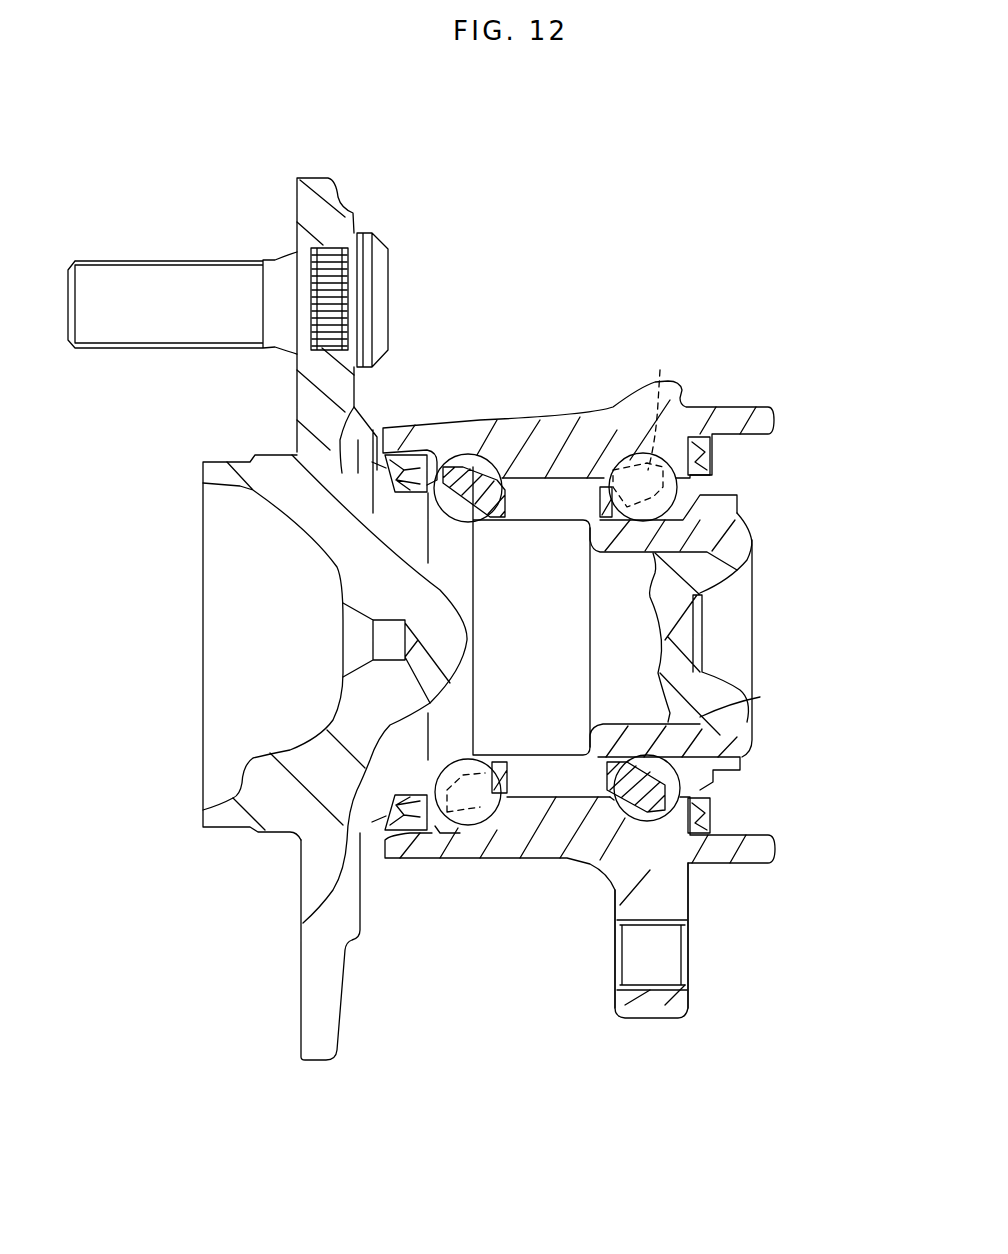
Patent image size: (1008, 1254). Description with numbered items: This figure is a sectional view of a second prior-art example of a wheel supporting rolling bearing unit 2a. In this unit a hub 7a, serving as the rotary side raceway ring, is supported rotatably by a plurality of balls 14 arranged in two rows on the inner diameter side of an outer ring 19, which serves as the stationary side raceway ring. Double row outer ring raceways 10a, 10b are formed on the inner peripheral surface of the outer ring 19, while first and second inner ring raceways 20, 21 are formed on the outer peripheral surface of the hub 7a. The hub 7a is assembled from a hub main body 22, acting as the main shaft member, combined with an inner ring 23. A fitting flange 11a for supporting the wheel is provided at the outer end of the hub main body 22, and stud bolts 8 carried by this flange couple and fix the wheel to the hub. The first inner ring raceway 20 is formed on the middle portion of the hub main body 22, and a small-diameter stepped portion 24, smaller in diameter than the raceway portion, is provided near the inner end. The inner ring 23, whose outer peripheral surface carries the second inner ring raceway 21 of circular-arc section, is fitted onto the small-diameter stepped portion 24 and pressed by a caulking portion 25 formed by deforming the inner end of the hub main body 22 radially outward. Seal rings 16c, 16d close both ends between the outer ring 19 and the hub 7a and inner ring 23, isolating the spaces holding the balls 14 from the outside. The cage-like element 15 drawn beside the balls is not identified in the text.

The wheel supporting rolling bearing unit 2a is at (729, 393).
The hub 7a is at (327, 442).
The stud bolt 8 is at (183, 285).
The outer ring raceway 10a is at (468, 817).
The outer ring raceway 10b is at (663, 827).
The fitting flange 11a is at (323, 1003).
The ball 14 is at (610, 463).
The cage 15 is at (460, 467).
The seal ring 16c is at (388, 826).
The seal ring 16d is at (717, 815).
The outer ring 19 is at (603, 877).
The first inner ring raceway 20 is at (448, 500).
The second inner ring raceway 21 is at (733, 510).
The hub main body 22 is at (447, 713).
The inner ring 23 is at (720, 747).
The small-diameter stepped portion 24 is at (705, 723).
The caulking portion 25 is at (730, 537).